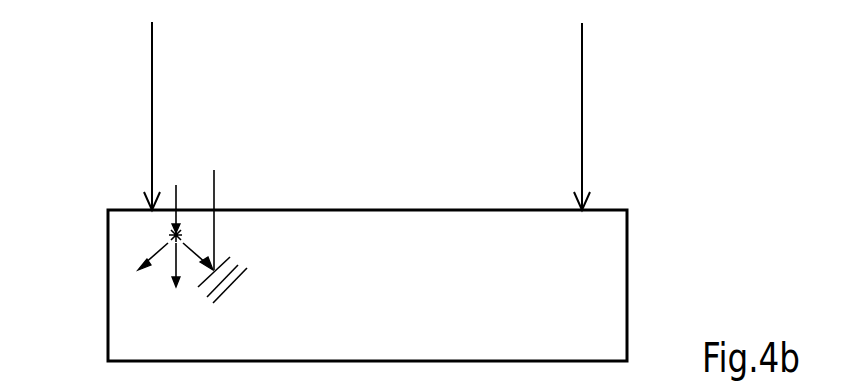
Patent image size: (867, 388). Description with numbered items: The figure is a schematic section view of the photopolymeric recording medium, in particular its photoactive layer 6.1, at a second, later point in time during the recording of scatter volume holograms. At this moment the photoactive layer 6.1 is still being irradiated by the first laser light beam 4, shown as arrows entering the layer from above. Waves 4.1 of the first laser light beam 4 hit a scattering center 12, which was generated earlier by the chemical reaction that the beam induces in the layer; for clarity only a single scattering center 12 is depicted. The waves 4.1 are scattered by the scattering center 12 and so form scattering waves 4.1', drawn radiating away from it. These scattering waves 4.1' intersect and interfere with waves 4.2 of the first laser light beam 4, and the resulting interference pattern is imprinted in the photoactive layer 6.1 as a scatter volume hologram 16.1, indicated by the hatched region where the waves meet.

The first laser light beam 4 is at (582, 78).
The waves of the first laser light beam 4.1 is at (193, 176).
The waves of the first laser light beam 4.2 is at (214, 185).
The scattering waves 4.1' is at (175, 297).
The scattering center 12 is at (166, 232).
The photoactive layer 6.1 is at (630, 240).
The scatter volume hologram 16.1 is at (237, 275).